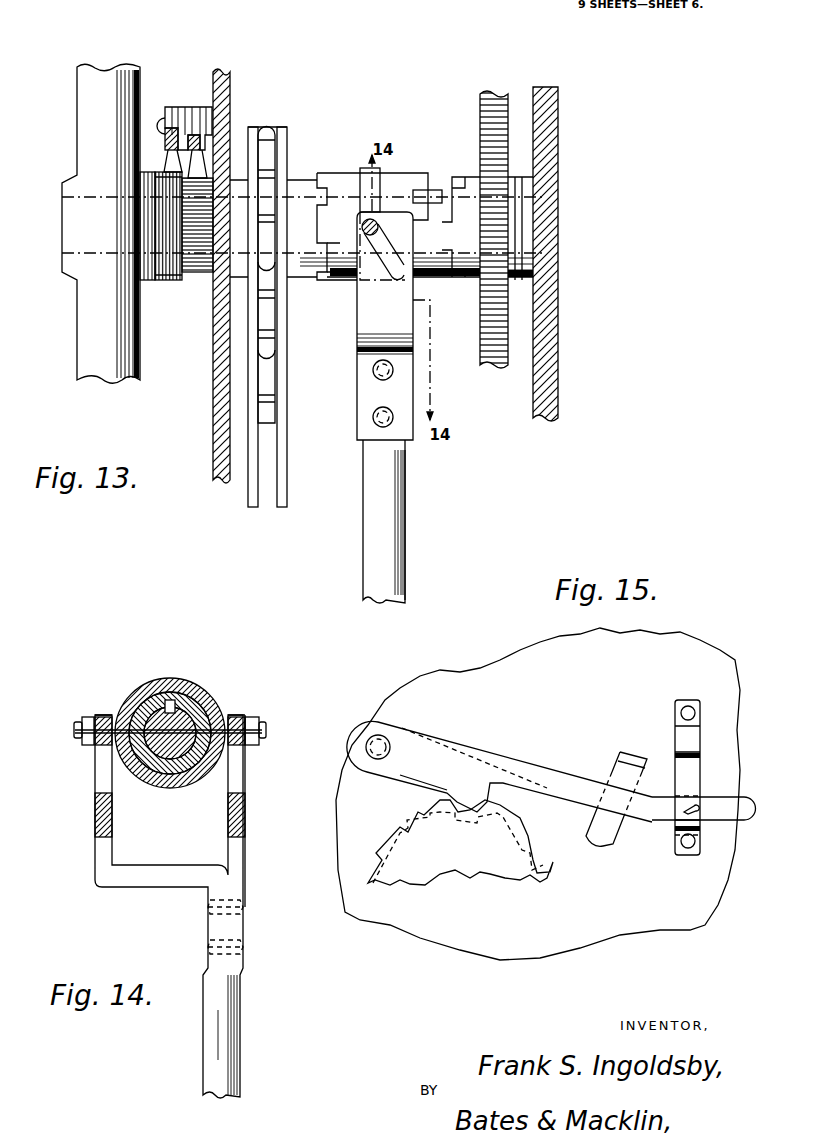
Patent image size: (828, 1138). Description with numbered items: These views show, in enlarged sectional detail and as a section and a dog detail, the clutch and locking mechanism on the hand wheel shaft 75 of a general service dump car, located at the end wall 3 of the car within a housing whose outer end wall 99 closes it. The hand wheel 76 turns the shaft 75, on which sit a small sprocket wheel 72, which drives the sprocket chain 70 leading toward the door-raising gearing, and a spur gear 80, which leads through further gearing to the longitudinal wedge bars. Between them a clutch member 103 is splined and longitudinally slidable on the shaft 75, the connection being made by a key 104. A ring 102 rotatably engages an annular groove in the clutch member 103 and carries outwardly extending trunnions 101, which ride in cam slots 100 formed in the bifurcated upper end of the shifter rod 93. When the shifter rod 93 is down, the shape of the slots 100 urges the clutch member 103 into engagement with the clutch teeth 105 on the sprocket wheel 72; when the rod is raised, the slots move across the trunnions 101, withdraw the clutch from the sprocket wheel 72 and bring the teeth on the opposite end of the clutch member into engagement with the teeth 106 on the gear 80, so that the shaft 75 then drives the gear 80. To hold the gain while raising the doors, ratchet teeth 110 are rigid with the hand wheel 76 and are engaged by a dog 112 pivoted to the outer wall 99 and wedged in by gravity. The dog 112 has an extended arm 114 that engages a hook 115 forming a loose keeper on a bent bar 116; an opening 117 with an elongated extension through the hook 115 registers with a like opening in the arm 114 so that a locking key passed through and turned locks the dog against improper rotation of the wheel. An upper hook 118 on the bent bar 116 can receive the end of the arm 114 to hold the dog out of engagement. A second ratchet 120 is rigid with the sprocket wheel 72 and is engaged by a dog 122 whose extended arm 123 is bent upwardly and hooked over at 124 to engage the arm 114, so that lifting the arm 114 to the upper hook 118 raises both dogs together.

In FIG. 13, the end wall 3 is at (558, 300).
In FIG. 13, the sprocket chain 70 is at (290, 160).
In FIG. 13, the sprocket wheel 72 is at (268, 127).
In FIG. 13, the shaft 75 is at (447, 258).
In FIG. 14, the shaft 75 is at (186, 770).
In FIG. 13, the hand wheel 76 is at (77, 340).
In FIG. 13, the spur gear 80 is at (480, 132).
In FIG. 13, the shifter rod 93 is at (405, 520).
In FIG. 14, the shifter rod 93 is at (243, 1018).
In FIG. 13, the end wall 99 is at (213, 395).
In FIG. 15, the end wall 99 is at (606, 677).
In FIG. 13, the cam slots 100 is at (362, 270).
In FIG. 14, the cam slots 100 is at (98, 790).
In FIG. 13, the trunnions 101 is at (375, 225).
In FIG. 14, the trunnions 101 is at (100, 748).
In FIG. 13, the ring 102 is at (362, 168).
In FIG. 14, the ring 102 is at (171, 678).
In FIG. 13, the clutch member 103 is at (335, 173).
In FIG. 14, the clutch member 103 is at (161, 775).
In FIG. 13, the key 104 is at (420, 196).
In FIG. 14, the key 104 is at (217, 692).
In FIG. 13, the clutch teeth 105 is at (325, 255).
In FIG. 13, the teeth 106 is at (462, 282).
In FIG. 13, the ratchet teeth 110 is at (175, 280).
In FIG. 15, the ratchet teeth 110 is at (410, 825).
In FIG. 13, the dog 112 is at (170, 130).
In FIG. 15, the dog 112 is at (499, 771).
In FIG. 15, the extended arm 114 is at (722, 797).
In FIG. 15, the hook 115 is at (700, 826).
In FIG. 15, the bent bar 116 is at (675, 774).
In FIG. 15, the opening 117 is at (685, 812).
In FIG. 15, the hook 118 is at (700, 737).
In FIG. 13, the ratchet 120 is at (203, 275).
In FIG. 15, the ratchet 120 is at (448, 843).
In FIG. 13, the dog 122 is at (195, 118).
In FIG. 15, the dog 122 is at (425, 789).
In FIG. 15, the extended arm 123 is at (601, 826).
In FIG. 15, the hook 124 is at (630, 755).